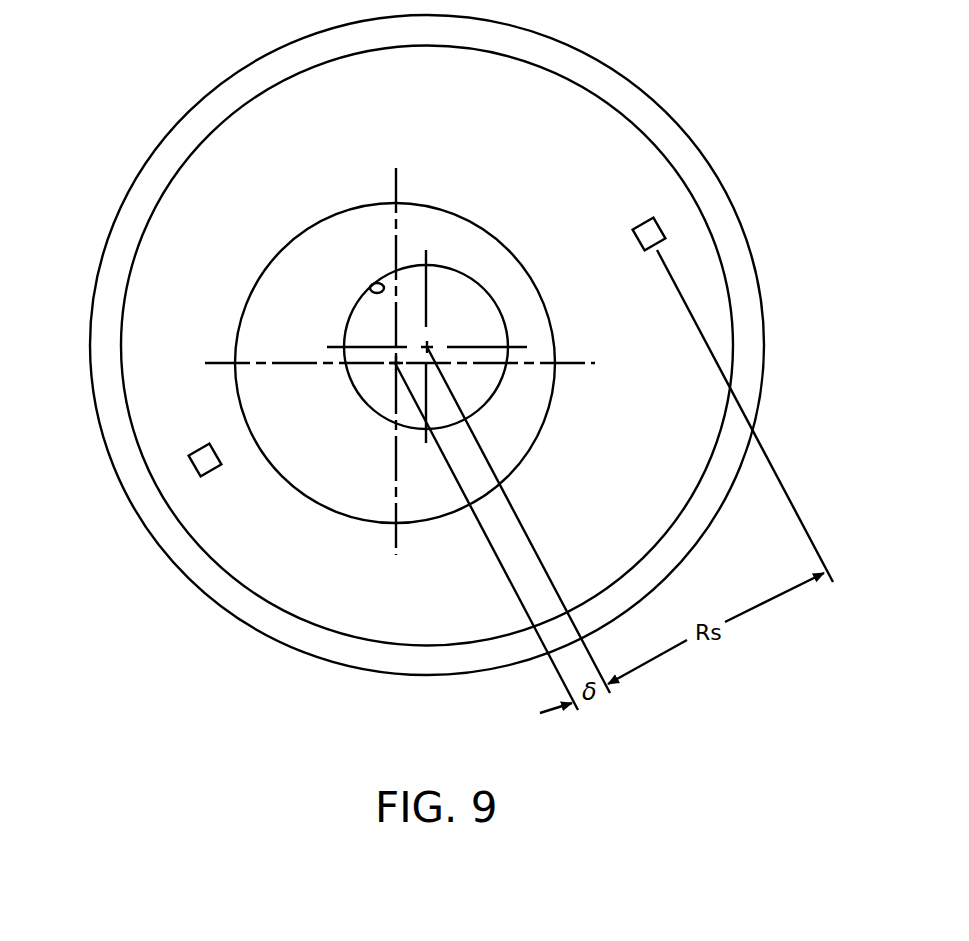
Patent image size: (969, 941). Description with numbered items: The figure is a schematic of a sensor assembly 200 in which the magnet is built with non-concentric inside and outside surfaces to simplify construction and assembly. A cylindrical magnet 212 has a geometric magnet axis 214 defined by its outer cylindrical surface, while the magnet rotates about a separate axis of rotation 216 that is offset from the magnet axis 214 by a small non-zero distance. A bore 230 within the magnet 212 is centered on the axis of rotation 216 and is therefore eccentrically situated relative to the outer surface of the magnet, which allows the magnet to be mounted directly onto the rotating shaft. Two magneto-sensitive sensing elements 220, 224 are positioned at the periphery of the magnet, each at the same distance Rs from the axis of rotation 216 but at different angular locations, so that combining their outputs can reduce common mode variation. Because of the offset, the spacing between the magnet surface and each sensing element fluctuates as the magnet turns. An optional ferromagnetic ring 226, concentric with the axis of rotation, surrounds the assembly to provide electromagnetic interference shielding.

The sensor assembly 200 is at (178, 56).
The magnet 212 is at (458, 240).
The magnet axis 214 is at (395, 363).
The axis of rotation 216 is at (427, 347).
The sensing element 220 is at (657, 223).
The sensing element 224 is at (193, 463).
The ring 226 is at (743, 282).
The bore 230 is at (372, 285).